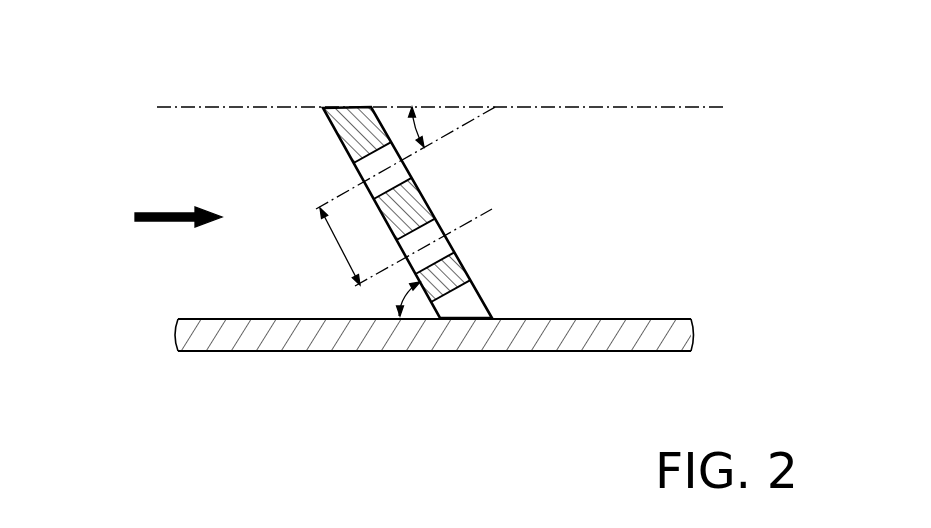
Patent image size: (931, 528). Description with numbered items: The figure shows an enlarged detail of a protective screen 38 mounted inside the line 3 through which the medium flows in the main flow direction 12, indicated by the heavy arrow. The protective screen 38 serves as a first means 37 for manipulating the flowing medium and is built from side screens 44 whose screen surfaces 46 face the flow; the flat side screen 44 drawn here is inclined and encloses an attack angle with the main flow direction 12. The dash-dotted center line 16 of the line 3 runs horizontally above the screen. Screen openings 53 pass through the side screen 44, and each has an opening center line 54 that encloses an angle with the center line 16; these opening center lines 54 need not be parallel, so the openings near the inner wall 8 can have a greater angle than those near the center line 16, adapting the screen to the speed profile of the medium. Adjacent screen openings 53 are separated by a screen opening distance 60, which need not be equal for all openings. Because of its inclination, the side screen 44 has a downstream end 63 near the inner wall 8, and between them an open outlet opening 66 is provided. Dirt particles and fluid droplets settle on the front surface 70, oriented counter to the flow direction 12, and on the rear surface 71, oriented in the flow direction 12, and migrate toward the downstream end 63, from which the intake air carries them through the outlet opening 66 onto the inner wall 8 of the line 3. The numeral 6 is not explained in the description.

The line 3 is at (398, 344).
The outer side of wall 6 is at (202, 353).
The inner wall 8 is at (398, 344).
The main flow direction 12 is at (163, 215).
The center line 16 is at (178, 106).
The first means for manipulating the flowing medium 37 is at (355, 176).
The protective screen 38 is at (355, 176).
The side screen 44 is at (355, 176).
The screen surface 46 is at (355, 176).
The screen openings 53 is at (396, 169).
The opening center line 54 is at (460, 128).
The screen opening distance 60 is at (337, 247).
The downstream end 63 is at (500, 303).
The outlet opening 66 is at (460, 303).
The front surface 70 is at (437, 294).
The rear surface 71 is at (462, 266).